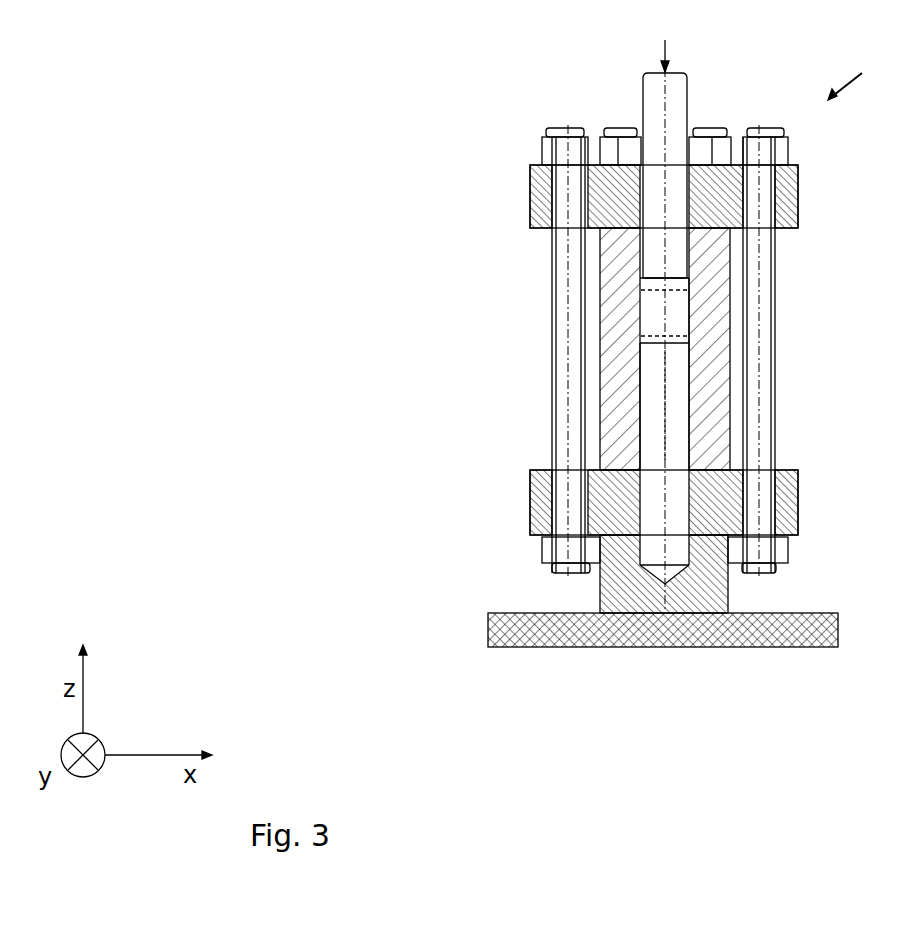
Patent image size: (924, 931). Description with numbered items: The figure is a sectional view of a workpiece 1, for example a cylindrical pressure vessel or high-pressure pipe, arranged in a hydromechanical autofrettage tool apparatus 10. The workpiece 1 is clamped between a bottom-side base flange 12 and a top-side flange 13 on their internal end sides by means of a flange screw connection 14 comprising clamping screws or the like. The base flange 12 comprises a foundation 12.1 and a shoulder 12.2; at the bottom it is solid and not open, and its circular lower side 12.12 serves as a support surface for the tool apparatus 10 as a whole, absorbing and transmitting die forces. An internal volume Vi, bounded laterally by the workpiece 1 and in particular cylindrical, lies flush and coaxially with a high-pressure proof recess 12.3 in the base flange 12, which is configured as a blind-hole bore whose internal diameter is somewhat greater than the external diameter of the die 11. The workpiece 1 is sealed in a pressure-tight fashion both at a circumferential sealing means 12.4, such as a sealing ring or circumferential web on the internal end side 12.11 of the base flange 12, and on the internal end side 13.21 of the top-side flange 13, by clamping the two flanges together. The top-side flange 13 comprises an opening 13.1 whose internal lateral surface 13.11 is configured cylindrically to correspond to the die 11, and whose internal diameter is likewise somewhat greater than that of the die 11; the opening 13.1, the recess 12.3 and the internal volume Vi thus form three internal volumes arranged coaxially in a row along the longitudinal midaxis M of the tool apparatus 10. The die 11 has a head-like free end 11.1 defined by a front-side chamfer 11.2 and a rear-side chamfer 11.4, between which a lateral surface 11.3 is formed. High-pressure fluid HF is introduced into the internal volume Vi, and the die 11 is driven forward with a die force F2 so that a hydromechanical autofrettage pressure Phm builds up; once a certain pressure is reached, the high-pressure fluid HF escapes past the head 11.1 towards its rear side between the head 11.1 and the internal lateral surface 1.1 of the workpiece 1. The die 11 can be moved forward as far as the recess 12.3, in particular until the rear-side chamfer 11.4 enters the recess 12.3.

The workpiece 1 is at (713, 341).
The internal lateral surface 1.1 is at (688, 393).
The hydromechanical autofrettage tool apparatus 10 is at (859, 75).
The die 11 is at (680, 117).
The free end 11.1 is at (690, 301).
The front-side chamfer 11.2 is at (655, 342).
The lateral surface 11.3 is at (655, 312).
The rear-side chamfer 11.4 is at (653, 280).
The base flange 12 is at (790, 505).
The foundation 12.1 is at (714, 592).
The internal end side 12.11 is at (797, 470).
The circular lower side 12.12 is at (708, 613).
The shoulder 12.2 is at (527, 547).
The recess 12.3 is at (657, 508).
The circumferential sealing means 12.4 is at (702, 463).
The top-side flange 13 is at (530, 180).
The opening 13.1 is at (692, 194).
The internal lateral surface 13.11 is at (647, 199).
The internal end side 13.21 is at (540, 229).
The flange screw connection 14 is at (775, 303).
The die force F2 is at (660, 44).
The high-pressure fluid HF is at (668, 378).
The hydromechanical autofrettage pressure Phm is at (665, 434).
The internal volume Vi is at (658, 402).
The longitudinal midaxis M is at (662, 547).